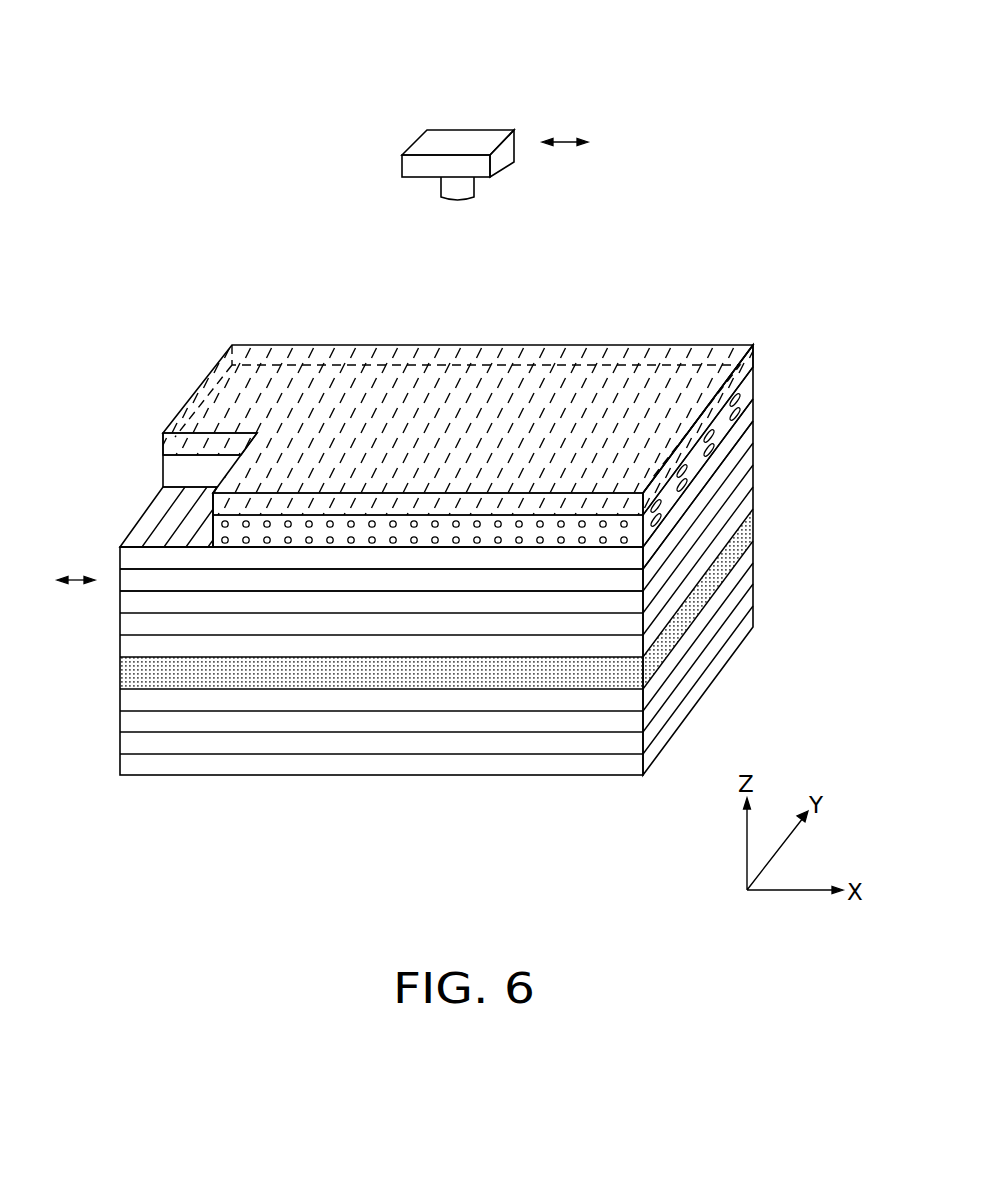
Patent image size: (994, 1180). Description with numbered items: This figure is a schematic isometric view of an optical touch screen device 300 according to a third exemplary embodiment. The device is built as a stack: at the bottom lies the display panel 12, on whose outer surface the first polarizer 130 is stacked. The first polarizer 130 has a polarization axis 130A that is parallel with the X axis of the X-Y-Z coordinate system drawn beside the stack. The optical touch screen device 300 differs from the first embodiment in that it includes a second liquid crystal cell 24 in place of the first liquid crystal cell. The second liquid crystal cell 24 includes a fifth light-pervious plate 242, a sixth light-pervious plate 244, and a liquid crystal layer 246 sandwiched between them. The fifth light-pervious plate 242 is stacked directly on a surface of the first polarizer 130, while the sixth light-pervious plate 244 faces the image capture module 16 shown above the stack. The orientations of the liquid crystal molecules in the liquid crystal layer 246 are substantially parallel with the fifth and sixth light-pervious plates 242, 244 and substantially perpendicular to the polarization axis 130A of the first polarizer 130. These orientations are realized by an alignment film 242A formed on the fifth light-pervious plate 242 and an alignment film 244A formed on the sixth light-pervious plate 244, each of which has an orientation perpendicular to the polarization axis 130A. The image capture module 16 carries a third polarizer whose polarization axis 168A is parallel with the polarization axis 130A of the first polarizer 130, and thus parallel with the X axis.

The optical touch screen device 300 is at (480, 27).
The image capture module 16 is at (428, 143).
The polarization axis 168A is at (565, 138).
The alignment film 244A is at (462, 393).
The sixth light-pervious plate 244 is at (745, 362).
The liquid crystal layer 246 is at (743, 402).
The fifth light-pervious plate 242 is at (746, 416).
The second liquid crystal cell 24 is at (843, 342).
The first polarizer 130 is at (743, 444).
The alignment film 242A is at (177, 522).
The polarization axis 130A is at (78, 577).
The display panel 12 is at (117, 580).